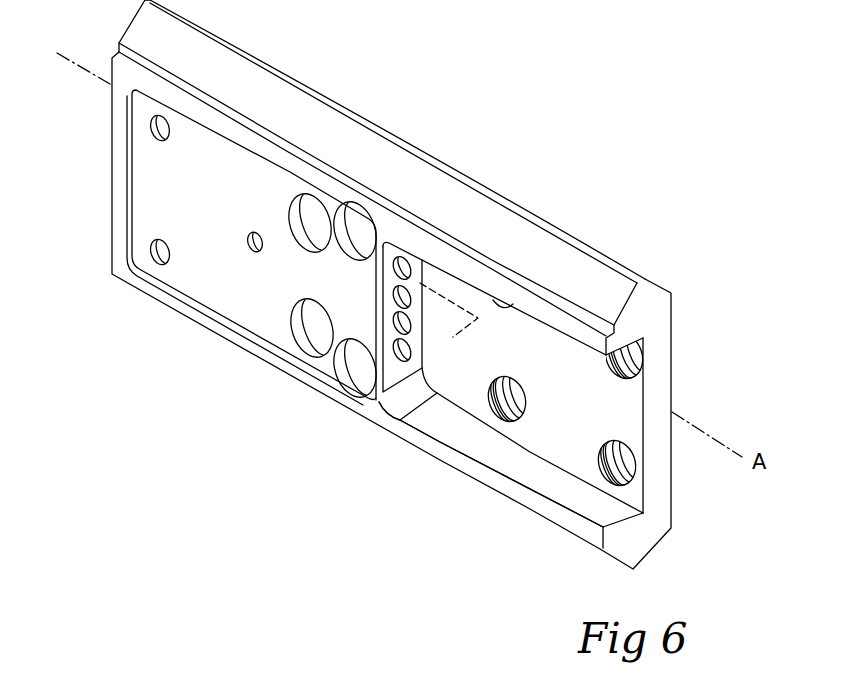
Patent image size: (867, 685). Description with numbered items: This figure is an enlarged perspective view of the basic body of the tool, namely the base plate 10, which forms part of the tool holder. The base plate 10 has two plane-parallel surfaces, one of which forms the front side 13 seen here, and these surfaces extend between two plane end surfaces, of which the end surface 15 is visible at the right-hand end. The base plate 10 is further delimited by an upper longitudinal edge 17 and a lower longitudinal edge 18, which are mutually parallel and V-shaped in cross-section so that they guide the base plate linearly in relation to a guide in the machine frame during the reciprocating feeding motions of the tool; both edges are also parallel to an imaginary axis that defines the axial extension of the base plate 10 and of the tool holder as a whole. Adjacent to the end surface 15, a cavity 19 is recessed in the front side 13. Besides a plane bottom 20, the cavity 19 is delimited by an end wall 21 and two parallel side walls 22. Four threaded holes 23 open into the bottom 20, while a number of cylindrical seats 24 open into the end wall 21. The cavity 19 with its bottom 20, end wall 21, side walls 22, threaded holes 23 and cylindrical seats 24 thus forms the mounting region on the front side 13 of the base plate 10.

The base plate 10 is at (676, 266).
The front side 13 is at (383, 420).
The end surface 15 is at (662, 372).
The upper longitudinal edge 17 is at (510, 202).
The lower longitudinal edge 18 is at (620, 564).
The cavity 19 is at (468, 458).
The bottom 20 is at (577, 398).
The end wall 21 is at (387, 293).
The side walls 22 is at (531, 475).
The threaded holes 23 is at (497, 392).
The cylindrical seats 24 is at (397, 331).